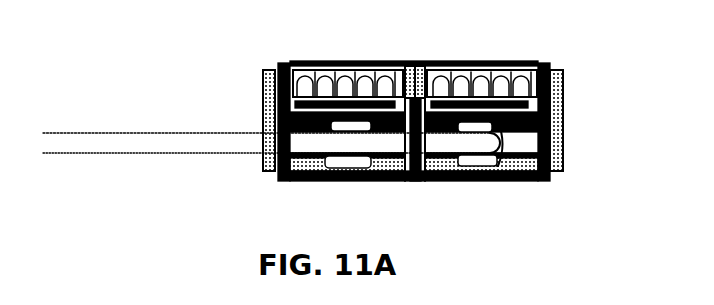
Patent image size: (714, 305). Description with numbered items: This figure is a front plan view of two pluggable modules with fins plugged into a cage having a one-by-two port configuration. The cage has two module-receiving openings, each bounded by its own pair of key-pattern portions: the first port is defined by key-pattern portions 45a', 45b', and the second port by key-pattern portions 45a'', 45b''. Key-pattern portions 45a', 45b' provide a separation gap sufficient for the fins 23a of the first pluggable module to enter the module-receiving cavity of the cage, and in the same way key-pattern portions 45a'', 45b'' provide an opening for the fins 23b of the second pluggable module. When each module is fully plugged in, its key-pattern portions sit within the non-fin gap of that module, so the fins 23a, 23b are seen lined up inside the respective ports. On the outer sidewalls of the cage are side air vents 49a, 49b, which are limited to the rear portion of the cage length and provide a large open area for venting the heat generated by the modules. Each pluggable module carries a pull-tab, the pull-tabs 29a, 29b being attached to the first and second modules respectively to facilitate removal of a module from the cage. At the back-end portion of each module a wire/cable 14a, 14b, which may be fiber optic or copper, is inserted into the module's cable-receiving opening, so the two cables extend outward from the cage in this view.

The side air vent 49a is at (263, 80).
The side air vent 49b is at (564, 80).
The key-pattern portion 45a' is at (279, 102).
The key-pattern portion 45b' is at (398, 60).
The key-pattern portion 45a'' is at (435, 69).
The key-pattern portion 45b'' is at (547, 103).
The fins 23a is at (343, 75).
The fins 23b is at (485, 75).
The pull-tab 29a is at (300, 108).
The pull-tab 29b is at (525, 108).
The wire/cable 14a is at (310, 162).
The wire/cable 14b is at (520, 162).